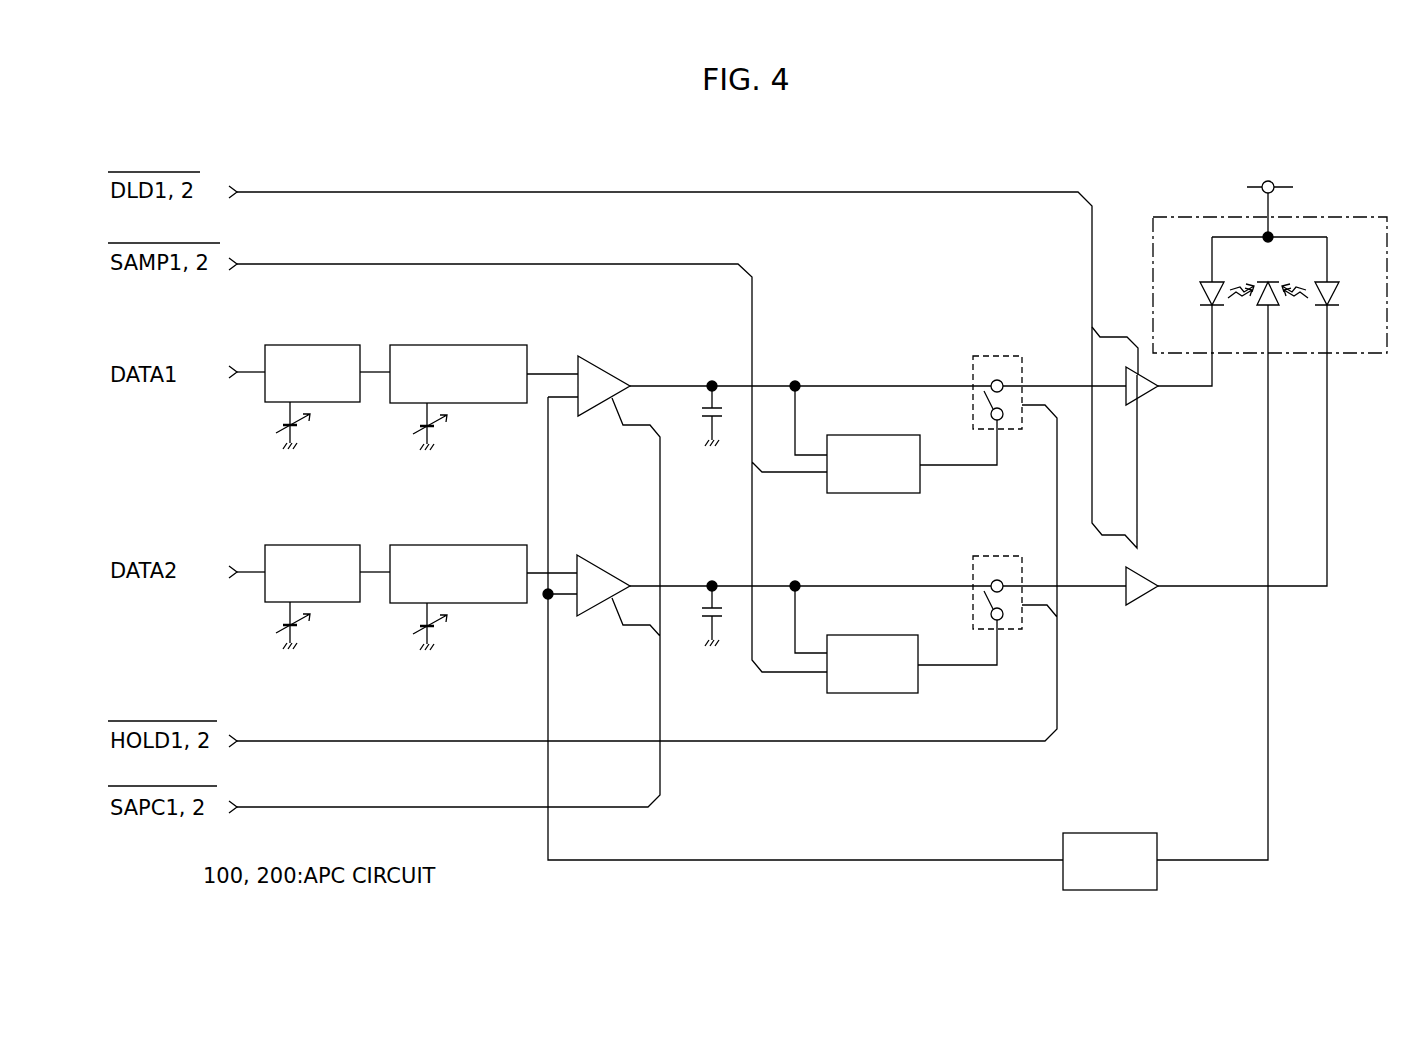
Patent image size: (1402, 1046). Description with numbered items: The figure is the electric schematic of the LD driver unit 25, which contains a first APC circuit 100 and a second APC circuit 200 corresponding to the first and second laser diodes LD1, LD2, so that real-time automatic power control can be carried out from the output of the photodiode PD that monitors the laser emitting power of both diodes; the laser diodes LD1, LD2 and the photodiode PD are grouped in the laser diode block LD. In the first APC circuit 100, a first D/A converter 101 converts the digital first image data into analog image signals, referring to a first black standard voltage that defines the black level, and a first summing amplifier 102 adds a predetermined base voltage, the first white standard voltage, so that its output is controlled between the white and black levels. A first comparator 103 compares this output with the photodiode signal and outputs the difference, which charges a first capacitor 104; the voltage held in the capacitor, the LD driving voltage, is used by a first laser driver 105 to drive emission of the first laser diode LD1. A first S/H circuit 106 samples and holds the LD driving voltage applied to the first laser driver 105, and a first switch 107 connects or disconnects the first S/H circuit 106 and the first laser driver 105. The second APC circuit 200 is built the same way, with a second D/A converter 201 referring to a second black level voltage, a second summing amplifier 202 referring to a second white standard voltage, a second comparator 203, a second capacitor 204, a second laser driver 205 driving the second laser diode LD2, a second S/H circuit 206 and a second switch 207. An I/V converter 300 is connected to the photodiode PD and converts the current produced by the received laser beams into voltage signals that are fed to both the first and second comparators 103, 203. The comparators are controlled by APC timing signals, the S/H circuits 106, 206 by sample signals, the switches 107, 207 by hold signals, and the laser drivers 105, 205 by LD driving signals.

The LD driver unit 25 is at (1370, 144).
The first APC circuit 100 is at (817, 315).
The first D/A converter 101 is at (314, 345).
The first summing amplifier 102 is at (460, 345).
The first comparator 103 is at (605, 364).
The first capacitor 104 is at (697, 415).
The first laser driver 105 is at (1143, 398).
The first S/H circuit 106 is at (868, 493).
The first switch 107 is at (998, 355).
The second APC circuit 200 is at (861, 768).
The second D/A converter 201 is at (314, 545).
The second summing amplifier 202 is at (460, 545).
The second comparator 203 is at (605, 563).
The second capacitor 204 is at (697, 615).
The second laser driver 205 is at (1143, 598).
The second S/H circuit 206 is at (868, 693).
The second switch 207 is at (998, 555).
The I/V converter 300 is at (1112, 833).
The laser diode LD is at (1341, 215).
The first laser diode LD1 is at (1200, 296).
The second laser diode LD2 is at (1338, 296).
The photodiode PD is at (1262, 306).